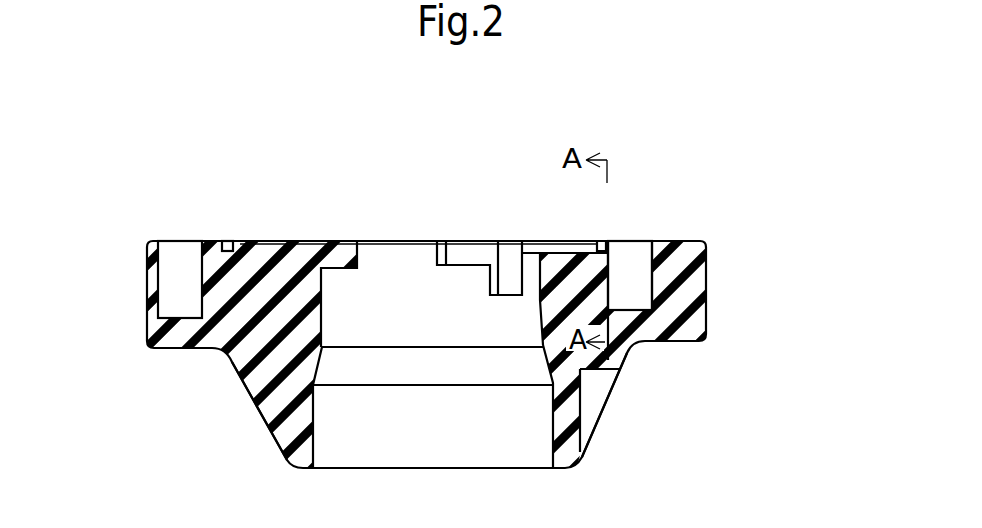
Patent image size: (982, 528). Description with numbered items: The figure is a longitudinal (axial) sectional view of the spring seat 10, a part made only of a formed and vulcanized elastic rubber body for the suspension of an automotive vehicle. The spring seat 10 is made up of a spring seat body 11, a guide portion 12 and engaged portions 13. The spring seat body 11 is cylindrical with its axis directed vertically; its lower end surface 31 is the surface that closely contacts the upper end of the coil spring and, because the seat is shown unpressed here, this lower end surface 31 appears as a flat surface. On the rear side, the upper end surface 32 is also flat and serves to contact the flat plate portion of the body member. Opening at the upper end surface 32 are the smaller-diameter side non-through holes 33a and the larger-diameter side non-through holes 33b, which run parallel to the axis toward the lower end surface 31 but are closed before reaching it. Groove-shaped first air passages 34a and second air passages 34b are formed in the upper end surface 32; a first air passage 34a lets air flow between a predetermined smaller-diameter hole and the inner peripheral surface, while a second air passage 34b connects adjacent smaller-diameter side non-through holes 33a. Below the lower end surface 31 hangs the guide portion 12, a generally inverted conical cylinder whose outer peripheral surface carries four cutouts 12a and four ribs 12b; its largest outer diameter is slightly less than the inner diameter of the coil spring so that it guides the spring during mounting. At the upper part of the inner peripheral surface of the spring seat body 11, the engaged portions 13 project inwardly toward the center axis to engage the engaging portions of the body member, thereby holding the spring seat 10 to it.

The spring seat 10 is at (716, 153).
The spring seat body 11 is at (695, 280).
The guide portion 12 is at (573, 450).
The cutout 12a is at (598, 400).
The rib 12b is at (272, 416).
The engaged portion 13 is at (346, 252).
The lower end surface 31 is at (200, 347).
The upper end surface 32 is at (678, 232).
The smaller-diameter side non-through hole 33a is at (645, 250).
The larger-diameter side non-through hole 33b is at (167, 243).
The first air passage 34a is at (600, 242).
The second air passage 34b is at (228, 243).